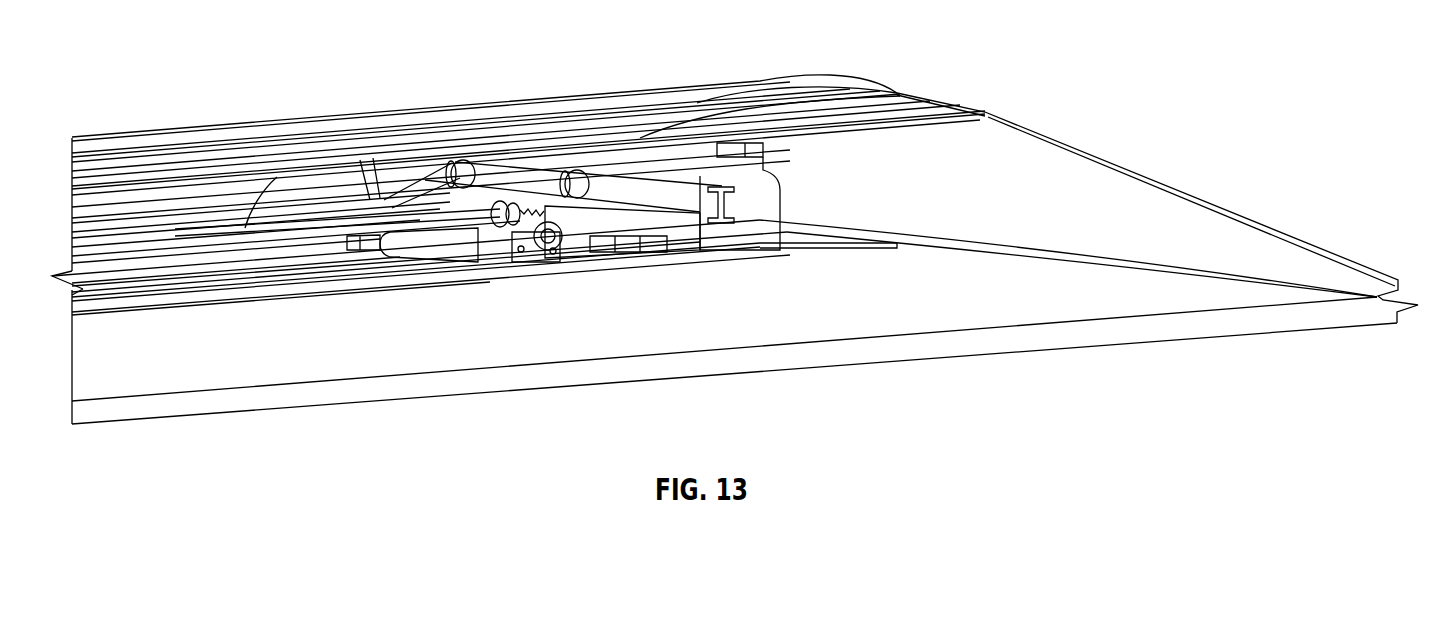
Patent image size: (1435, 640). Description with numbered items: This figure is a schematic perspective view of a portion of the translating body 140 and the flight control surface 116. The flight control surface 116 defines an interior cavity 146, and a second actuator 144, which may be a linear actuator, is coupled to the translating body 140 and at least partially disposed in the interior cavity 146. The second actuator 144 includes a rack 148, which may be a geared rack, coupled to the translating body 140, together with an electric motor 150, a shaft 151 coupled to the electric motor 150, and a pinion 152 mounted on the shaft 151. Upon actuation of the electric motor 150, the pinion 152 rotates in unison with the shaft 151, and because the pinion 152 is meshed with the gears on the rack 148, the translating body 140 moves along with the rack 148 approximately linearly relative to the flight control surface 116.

The flight control surface 116 is at (1213, 190).
The translating body 140 is at (775, 76).
The second actuator 144 is at (566, 276).
The interior cavity 146 is at (1013, 193).
The rack 148 is at (623, 192).
The electric motor 150 is at (642, 235).
The shaft 151 is at (229, 235).
The pinion 152 is at (533, 243).